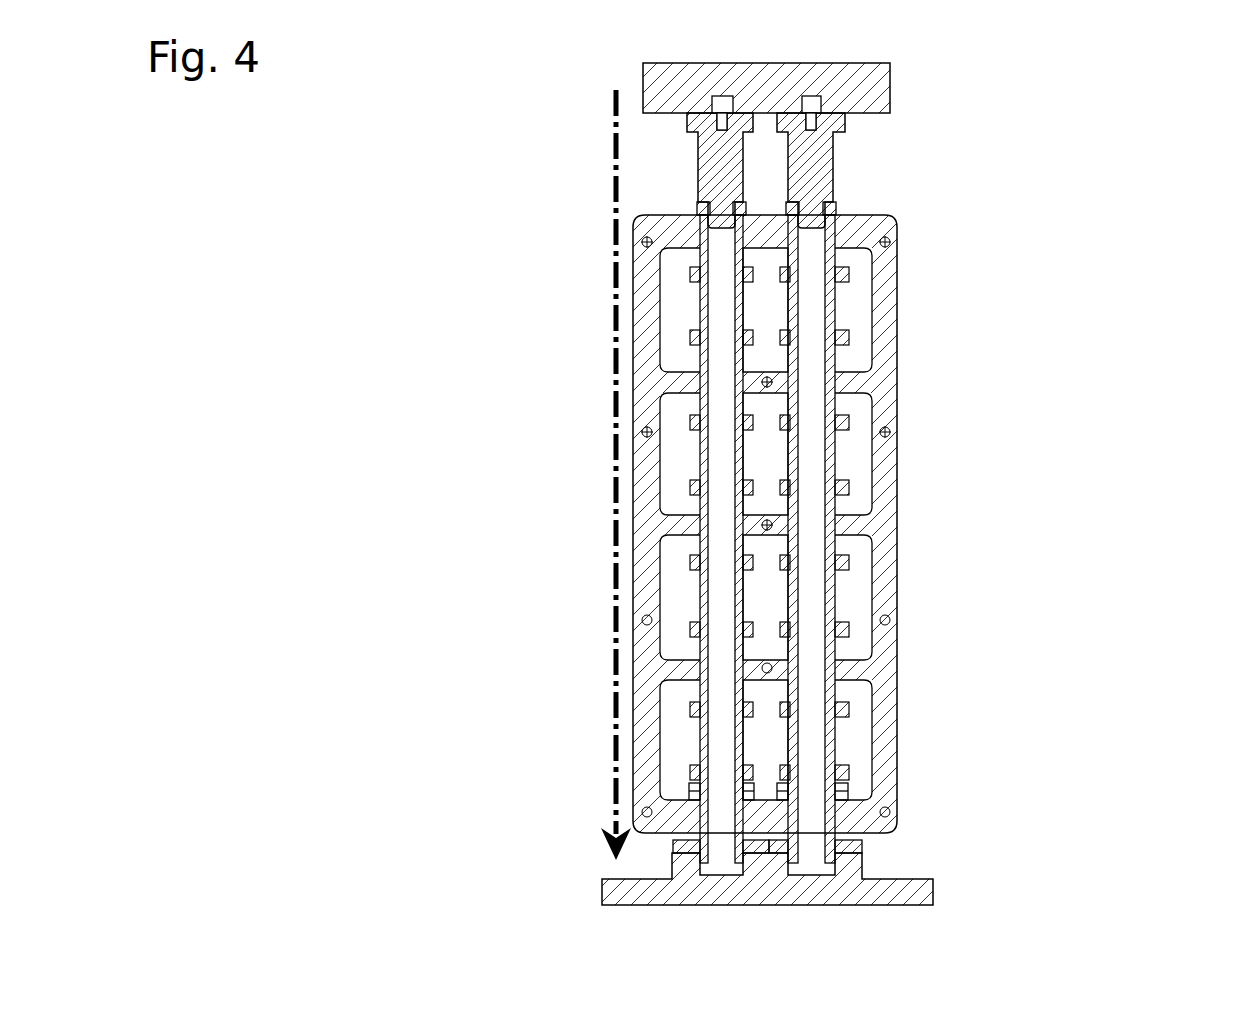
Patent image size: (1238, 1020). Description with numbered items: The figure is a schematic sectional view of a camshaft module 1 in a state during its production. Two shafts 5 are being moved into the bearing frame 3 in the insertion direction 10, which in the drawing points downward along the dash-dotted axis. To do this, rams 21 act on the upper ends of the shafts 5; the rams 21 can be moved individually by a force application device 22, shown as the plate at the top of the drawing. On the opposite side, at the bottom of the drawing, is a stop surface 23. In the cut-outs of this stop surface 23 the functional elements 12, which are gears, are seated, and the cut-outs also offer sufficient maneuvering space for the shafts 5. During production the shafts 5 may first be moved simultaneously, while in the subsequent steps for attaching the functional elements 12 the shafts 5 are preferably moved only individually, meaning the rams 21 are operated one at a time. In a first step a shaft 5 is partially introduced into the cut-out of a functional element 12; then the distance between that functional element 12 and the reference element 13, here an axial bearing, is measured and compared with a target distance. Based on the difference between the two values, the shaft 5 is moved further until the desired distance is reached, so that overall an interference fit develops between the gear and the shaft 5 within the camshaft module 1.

The camshaft module 1 is at (1075, 348).
The bearing frame 3 is at (885, 463).
The shafts 5 is at (735, 357).
The insertion direction 10 is at (618, 790).
The functional elements 12 is at (747, 850).
The reference element 13 is at (748, 787).
The rams 21 is at (718, 175).
The force application device 22 is at (873, 105).
The stop surface 23 is at (848, 898).